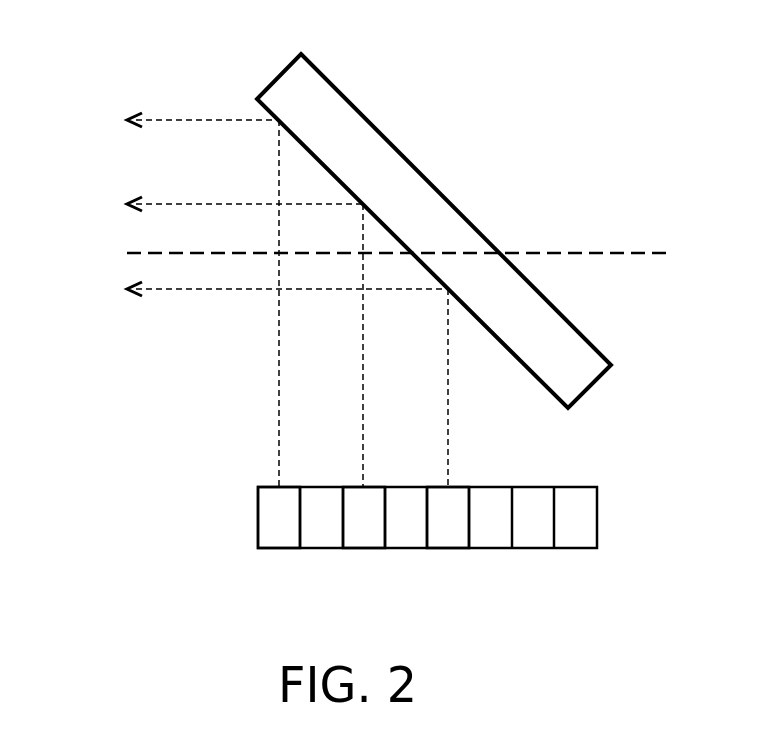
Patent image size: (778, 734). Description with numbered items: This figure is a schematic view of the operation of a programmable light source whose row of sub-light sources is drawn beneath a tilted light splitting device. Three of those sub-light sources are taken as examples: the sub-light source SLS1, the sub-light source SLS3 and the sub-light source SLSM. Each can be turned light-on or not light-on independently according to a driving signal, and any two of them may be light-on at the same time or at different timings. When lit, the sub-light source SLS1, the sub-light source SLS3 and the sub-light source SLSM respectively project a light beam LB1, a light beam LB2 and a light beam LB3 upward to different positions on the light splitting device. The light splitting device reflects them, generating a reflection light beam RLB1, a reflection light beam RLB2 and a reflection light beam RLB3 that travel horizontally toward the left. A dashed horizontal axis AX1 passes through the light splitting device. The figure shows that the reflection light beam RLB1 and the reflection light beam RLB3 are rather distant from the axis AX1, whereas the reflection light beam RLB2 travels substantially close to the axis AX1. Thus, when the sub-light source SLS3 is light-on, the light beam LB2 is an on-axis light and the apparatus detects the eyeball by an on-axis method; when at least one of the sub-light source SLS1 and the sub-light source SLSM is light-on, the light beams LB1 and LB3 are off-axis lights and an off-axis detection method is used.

The axis AX1 is at (620, 252).
The reflection light beam RLB1 is at (170, 118).
The reflection light beam RLB2 is at (170, 202).
The reflection light beam RLB3 is at (170, 292).
The light beam LB1 is at (278, 428).
The light beam LB2 is at (363, 428).
The light beam LB3 is at (448, 428).
The sub-light source SLS1 is at (278, 533).
The sub-light source SLS3 is at (364, 533).
The sub-light source SLSM is at (448, 533).